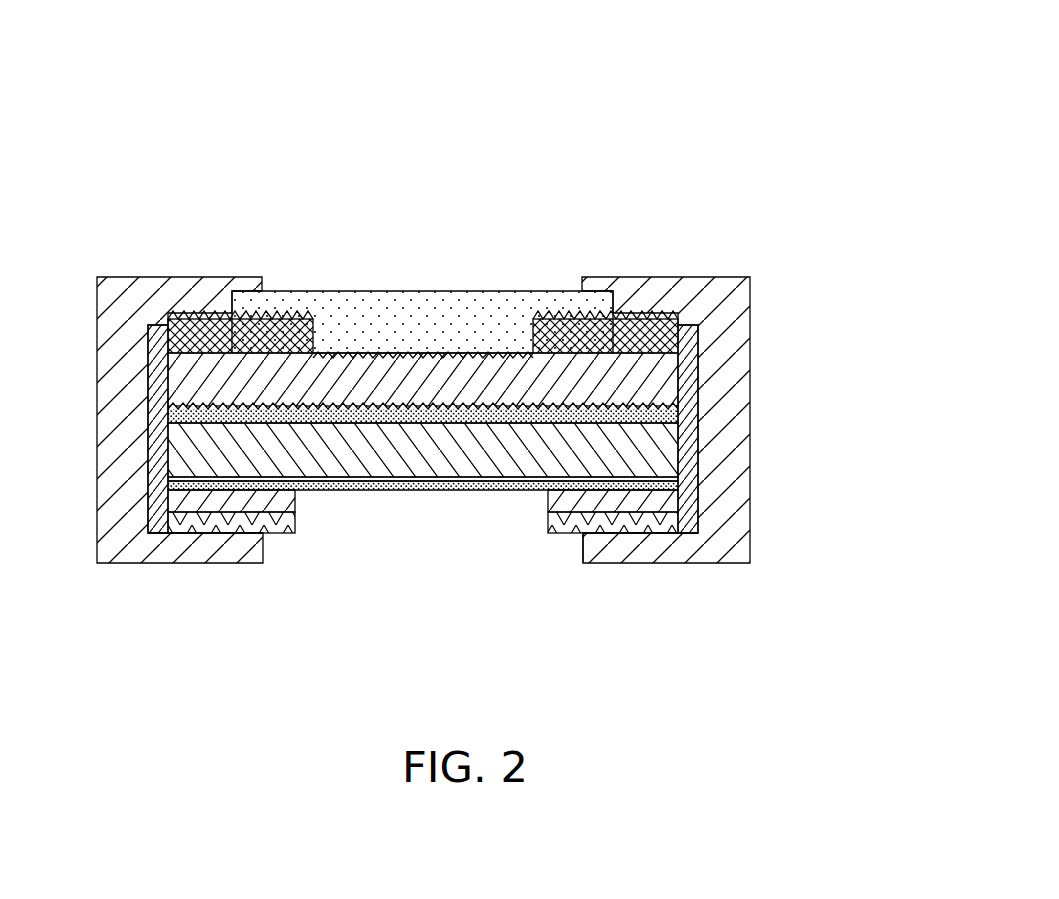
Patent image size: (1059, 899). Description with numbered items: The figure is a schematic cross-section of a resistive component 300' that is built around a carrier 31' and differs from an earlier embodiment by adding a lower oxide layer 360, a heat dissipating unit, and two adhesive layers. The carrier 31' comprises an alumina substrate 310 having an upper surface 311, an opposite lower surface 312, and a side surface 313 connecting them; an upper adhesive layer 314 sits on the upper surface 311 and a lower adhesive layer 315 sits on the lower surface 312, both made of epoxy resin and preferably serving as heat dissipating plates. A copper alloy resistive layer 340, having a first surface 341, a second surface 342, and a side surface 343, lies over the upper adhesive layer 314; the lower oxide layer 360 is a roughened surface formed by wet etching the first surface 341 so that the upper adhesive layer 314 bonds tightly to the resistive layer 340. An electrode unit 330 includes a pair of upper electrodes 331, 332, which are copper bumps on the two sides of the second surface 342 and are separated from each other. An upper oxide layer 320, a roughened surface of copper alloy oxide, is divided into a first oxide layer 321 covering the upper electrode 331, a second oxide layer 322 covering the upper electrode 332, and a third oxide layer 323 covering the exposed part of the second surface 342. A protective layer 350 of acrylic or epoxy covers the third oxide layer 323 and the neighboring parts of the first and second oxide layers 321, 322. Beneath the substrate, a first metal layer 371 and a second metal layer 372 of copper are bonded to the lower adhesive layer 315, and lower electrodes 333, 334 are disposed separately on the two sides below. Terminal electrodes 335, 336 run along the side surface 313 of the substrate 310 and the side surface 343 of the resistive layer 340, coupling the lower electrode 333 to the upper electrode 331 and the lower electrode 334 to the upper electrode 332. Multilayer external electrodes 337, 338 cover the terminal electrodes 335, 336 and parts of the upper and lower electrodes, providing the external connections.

The resistive component 300' is at (454, 328).
The substrate 310 is at (427, 457).
The upper surface 311 is at (665, 440).
The lower surface 312 is at (668, 486).
The side surface 313 is at (668, 479).
The upper adhesive layer 314 is at (373, 408).
The lower adhesive layer 315 is at (437, 484).
The carrier 31' is at (529, 488).
The upper oxide layer 320 is at (540, 177).
The first oxide layer 321 is at (263, 315).
The second oxide layer 322 is at (575, 312).
The third oxide layer 323 is at (343, 335).
The electrode unit 330 is at (83, 553).
The upper electrode 331 is at (212, 328).
The upper electrode 332 is at (640, 328).
The lower electrode 333 is at (223, 524).
The lower electrode 334 is at (620, 520).
The terminal electrode 335 is at (158, 508).
The terminal electrode 336 is at (700, 518).
The external electrode 337 is at (137, 298).
The external electrode 338 is at (718, 290).
The resistive layer 340 is at (180, 375).
The first surface 341 is at (423, 488).
The second surface 342 is at (683, 352).
The side surface 343 is at (663, 366).
The protective layer 350 is at (483, 311).
The lower oxide layer 360 is at (665, 408).
The first metal layer 371 is at (277, 505).
The second metal layer 372 is at (572, 505).